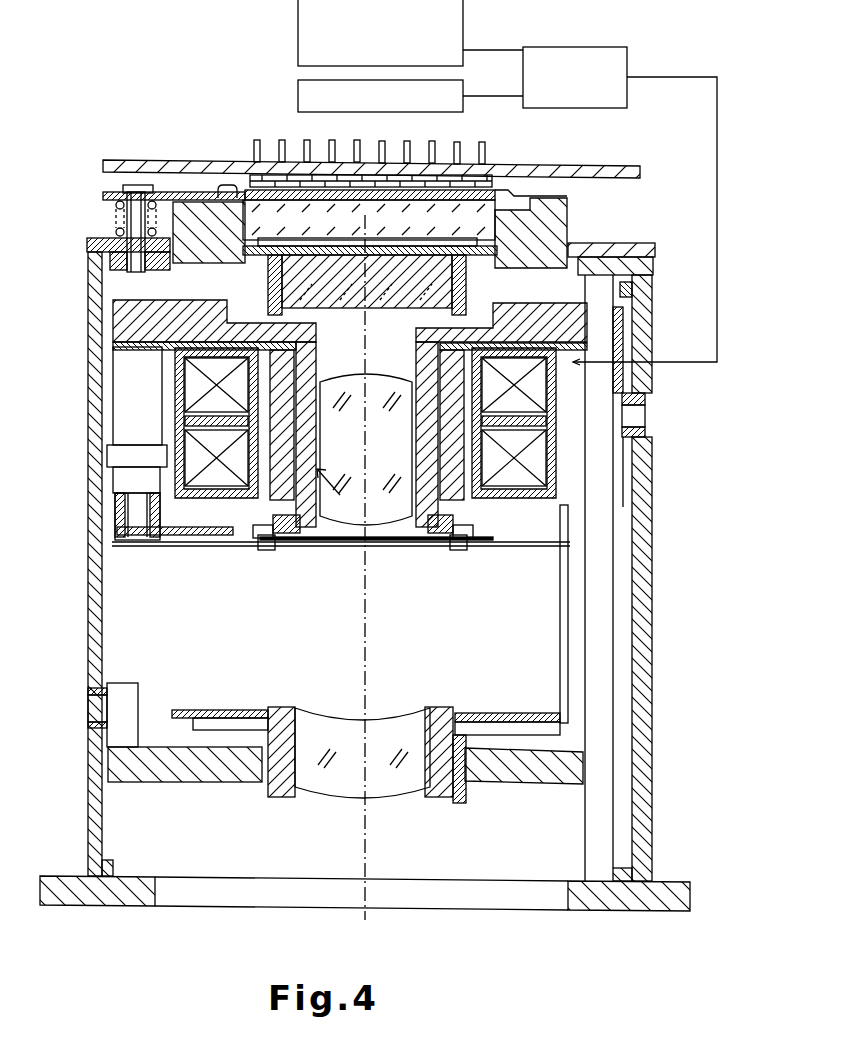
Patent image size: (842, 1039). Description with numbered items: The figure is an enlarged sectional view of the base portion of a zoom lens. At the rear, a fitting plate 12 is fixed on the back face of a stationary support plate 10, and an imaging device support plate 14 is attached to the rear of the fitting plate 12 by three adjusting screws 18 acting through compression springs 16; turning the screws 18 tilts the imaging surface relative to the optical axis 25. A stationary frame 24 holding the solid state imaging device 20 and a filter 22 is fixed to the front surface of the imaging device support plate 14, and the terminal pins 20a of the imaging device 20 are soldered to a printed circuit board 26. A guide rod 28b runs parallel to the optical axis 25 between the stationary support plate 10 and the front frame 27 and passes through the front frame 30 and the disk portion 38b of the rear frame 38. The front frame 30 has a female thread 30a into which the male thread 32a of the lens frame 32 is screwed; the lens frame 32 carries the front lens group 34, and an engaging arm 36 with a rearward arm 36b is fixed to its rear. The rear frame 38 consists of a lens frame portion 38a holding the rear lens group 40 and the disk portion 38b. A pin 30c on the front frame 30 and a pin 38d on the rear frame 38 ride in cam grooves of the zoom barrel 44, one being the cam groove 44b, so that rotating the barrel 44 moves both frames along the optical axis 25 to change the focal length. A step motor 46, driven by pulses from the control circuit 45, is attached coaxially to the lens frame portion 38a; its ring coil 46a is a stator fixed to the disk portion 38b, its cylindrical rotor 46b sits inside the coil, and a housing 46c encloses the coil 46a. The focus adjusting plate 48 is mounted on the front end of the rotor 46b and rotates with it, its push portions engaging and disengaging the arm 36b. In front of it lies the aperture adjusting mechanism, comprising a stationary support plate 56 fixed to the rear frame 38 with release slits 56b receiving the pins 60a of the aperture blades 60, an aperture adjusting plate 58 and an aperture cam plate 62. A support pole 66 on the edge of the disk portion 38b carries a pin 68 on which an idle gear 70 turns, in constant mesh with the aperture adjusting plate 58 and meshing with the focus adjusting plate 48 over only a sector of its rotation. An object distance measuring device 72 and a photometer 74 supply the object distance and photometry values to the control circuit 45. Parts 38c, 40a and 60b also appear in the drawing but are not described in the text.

The stationary support plate 10 is at (655, 264).
The fitting plate 12 is at (638, 243).
The imaging device support plate 14 is at (533, 197).
The compression springs 16 is at (117, 233).
The adjusting screws 18 is at (133, 185).
The solid state imaging device 20 is at (404, 240).
The terminal pins 20a is at (263, 140).
The filter 22 is at (329, 300).
The stationary frame 24 is at (568, 223).
The optical axis 25 is at (362, 678).
The printed circuit board 26 is at (210, 162).
The front frame 27 is at (620, 912).
The guide rod 28b is at (613, 694).
The front frame 30 is at (177, 782).
The female thread 30a is at (445, 797).
The pin 30c is at (88, 710).
The lens frame 32 is at (283, 797).
The male thread 32a is at (470, 778).
The front lens group 34 is at (343, 799).
The engaging arm 36 is at (223, 710).
The arm 36b is at (558, 617).
The rear frame 38 is at (365, 547).
The lens frame portion 38a is at (418, 378).
The disk portion 38b is at (178, 300).
The barrel top flange 38c is at (600, 312).
The pin 38d is at (645, 404).
The rear lens group 40 is at (400, 548).
The block 40a is at (88, 728).
The zoom barrel 44 is at (652, 656).
The cam groove 44b is at (645, 433).
The control circuit 45 is at (627, 49).
The step motor 46 is at (565, 376).
The ring coil 46a is at (556, 447).
The cylindrical rotor 46b is at (480, 460).
The housing 46c is at (556, 487).
The focus adjusting plate 48 is at (208, 547).
The support plate 56 is at (182, 547).
The release slits 56b is at (296, 548).
The aperture adjusting plate 58 is at (157, 547).
The aperture blades 60 is at (328, 550).
The pins 60a is at (252, 550).
The spring clamp 60b is at (272, 550).
The aperture cam plate 62 is at (233, 547).
The support pole 66 is at (110, 395).
The pin 68 is at (117, 520).
The idle gear 70 is at (113, 486).
The object distance measuring device 72 is at (298, 55).
The photometer 74 is at (298, 87).